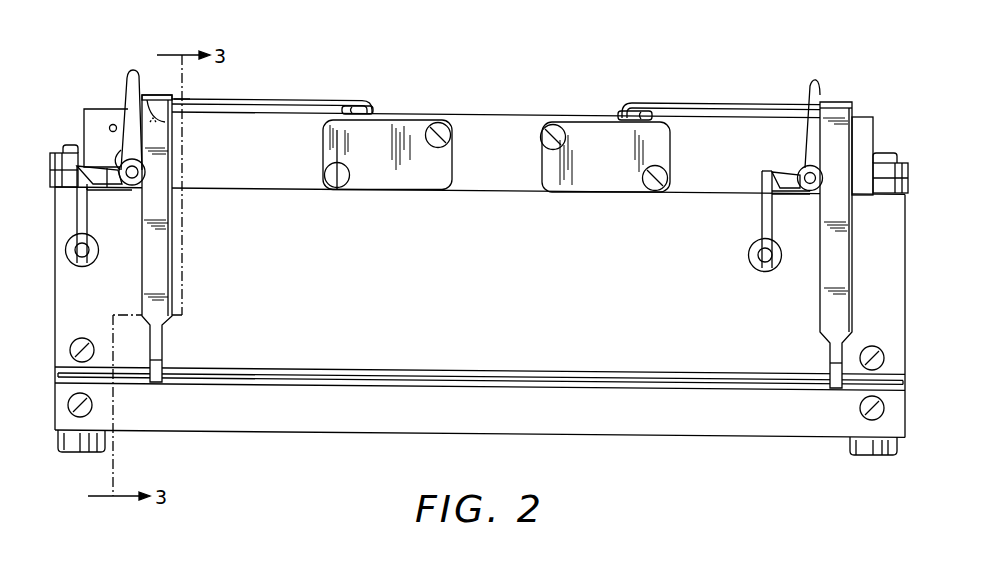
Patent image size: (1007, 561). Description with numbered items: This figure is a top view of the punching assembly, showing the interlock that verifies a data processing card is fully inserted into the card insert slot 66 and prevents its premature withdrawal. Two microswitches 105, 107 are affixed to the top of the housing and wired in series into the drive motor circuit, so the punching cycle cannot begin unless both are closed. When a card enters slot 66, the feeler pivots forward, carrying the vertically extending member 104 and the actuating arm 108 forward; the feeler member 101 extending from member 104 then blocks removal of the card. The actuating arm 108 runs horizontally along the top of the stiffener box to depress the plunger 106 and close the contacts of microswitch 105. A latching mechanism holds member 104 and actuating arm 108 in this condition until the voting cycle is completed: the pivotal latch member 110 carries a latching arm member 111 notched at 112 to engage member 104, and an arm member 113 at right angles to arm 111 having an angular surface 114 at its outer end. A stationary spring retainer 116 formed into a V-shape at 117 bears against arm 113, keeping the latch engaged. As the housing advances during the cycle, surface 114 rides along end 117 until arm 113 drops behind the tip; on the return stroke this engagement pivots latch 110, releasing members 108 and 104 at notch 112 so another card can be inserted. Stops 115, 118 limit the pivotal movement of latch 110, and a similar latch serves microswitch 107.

The card insert slot 66 is at (345, 378).
The feeler member 101 is at (157, 280).
The vertically extending member 104 is at (157, 95).
The microswitch 105 is at (405, 130).
The plunger 106 is at (358, 105).
The microswitch 107 is at (595, 140).
The actuating arm 108 is at (277, 100).
The pivotal latch member 110 is at (136, 172).
The latching arm member 111 is at (131, 82).
The notch 112 is at (164, 122).
The arm member 113 is at (116, 196).
The angular surface 114 is at (100, 182).
The stop 115 is at (112, 124).
The spring retainer 116 is at (86, 220).
The V-shaped spring end 117 is at (76, 176).
The stop 118 is at (188, 100).